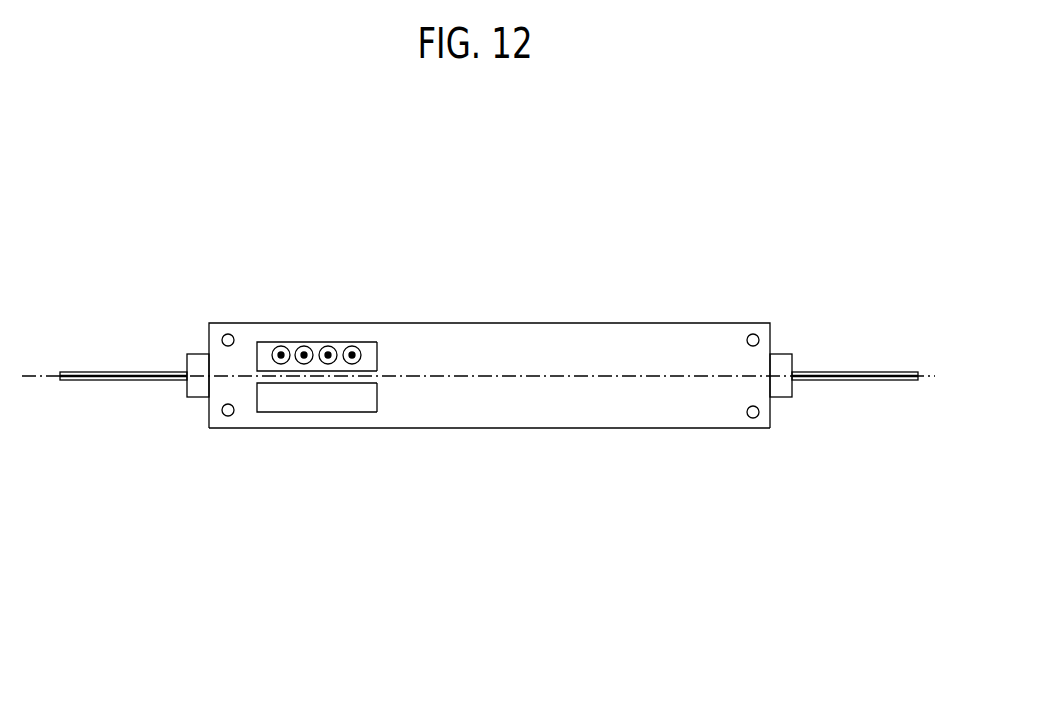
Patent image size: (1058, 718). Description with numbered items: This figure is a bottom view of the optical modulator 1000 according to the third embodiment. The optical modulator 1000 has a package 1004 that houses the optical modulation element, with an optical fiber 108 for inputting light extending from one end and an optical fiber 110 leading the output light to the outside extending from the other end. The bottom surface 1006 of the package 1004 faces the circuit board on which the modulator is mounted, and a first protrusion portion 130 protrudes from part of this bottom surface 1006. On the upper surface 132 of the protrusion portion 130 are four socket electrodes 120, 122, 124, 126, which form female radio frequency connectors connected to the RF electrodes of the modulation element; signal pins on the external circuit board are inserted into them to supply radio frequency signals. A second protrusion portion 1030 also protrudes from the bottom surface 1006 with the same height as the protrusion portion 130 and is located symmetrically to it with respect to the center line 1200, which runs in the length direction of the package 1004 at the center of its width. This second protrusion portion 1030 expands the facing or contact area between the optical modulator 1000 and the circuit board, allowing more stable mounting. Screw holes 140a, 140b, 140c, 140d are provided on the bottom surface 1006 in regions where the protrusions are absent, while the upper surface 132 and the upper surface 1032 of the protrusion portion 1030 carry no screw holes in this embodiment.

The optical modulator 1000 is at (618, 241).
The package 1004 is at (630, 428).
The bottom surface 1006 is at (488, 412).
The center line 1200 is at (505, 375).
The optical fiber 108 is at (137, 381).
The optical fiber 110 is at (829, 383).
The screw hole 140a is at (224, 415).
The screw hole 140b is at (222, 339).
The screw hole 140c is at (757, 336).
The screw hole 140d is at (753, 419).
The protrusion portion 130 is at (266, 341).
The upper surface 132 is at (368, 352).
The socket electrode 120 is at (283, 346).
The socket electrode 122 is at (307, 346).
The socket electrode 124 is at (331, 346).
The socket electrode 126 is at (360, 346).
The protrusion portion 1030 is at (303, 413).
The upper surface 1032 is at (344, 400).